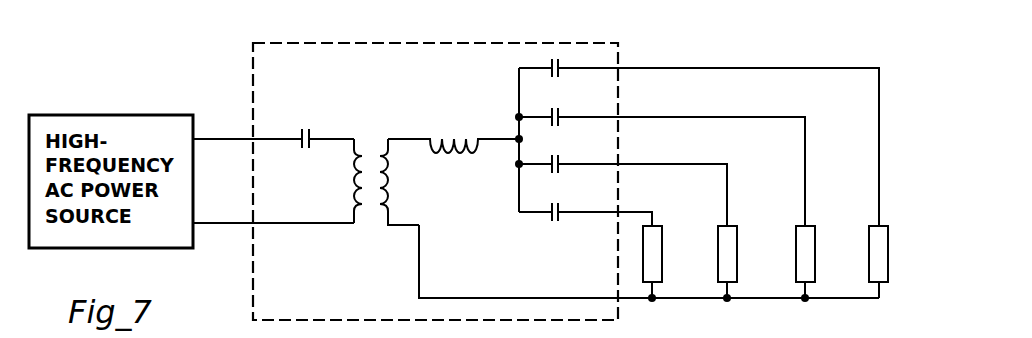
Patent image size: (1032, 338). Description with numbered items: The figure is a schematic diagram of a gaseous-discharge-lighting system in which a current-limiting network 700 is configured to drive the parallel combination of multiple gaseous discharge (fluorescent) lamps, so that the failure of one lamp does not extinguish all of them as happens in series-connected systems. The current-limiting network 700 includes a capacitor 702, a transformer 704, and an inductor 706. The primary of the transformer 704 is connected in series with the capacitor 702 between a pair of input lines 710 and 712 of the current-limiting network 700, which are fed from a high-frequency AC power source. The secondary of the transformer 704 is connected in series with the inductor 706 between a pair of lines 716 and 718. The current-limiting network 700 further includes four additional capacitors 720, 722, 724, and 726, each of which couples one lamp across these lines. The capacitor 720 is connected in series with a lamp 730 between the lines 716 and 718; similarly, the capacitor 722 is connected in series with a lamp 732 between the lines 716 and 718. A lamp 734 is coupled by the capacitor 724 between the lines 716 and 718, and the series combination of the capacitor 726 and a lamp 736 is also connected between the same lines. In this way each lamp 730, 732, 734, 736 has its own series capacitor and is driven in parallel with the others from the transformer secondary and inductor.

The current-limiting network 700 is at (502, 42).
The capacitor 702 is at (302, 129).
The transformer 704 is at (350, 184).
The inductor 706 is at (446, 136).
The input line 710 is at (238, 136).
The input line 712 is at (238, 220).
The line 716 is at (519, 186).
The line 718 is at (515, 295).
The capacitor 720 is at (557, 77).
The capacitor 722 is at (557, 133).
The capacitor 724 is at (557, 176).
The capacitor 726 is at (557, 222).
The lamp 730 is at (869, 241).
The lamp 732 is at (796, 241).
The lamp 734 is at (714, 242).
The lamp 736 is at (662, 255).